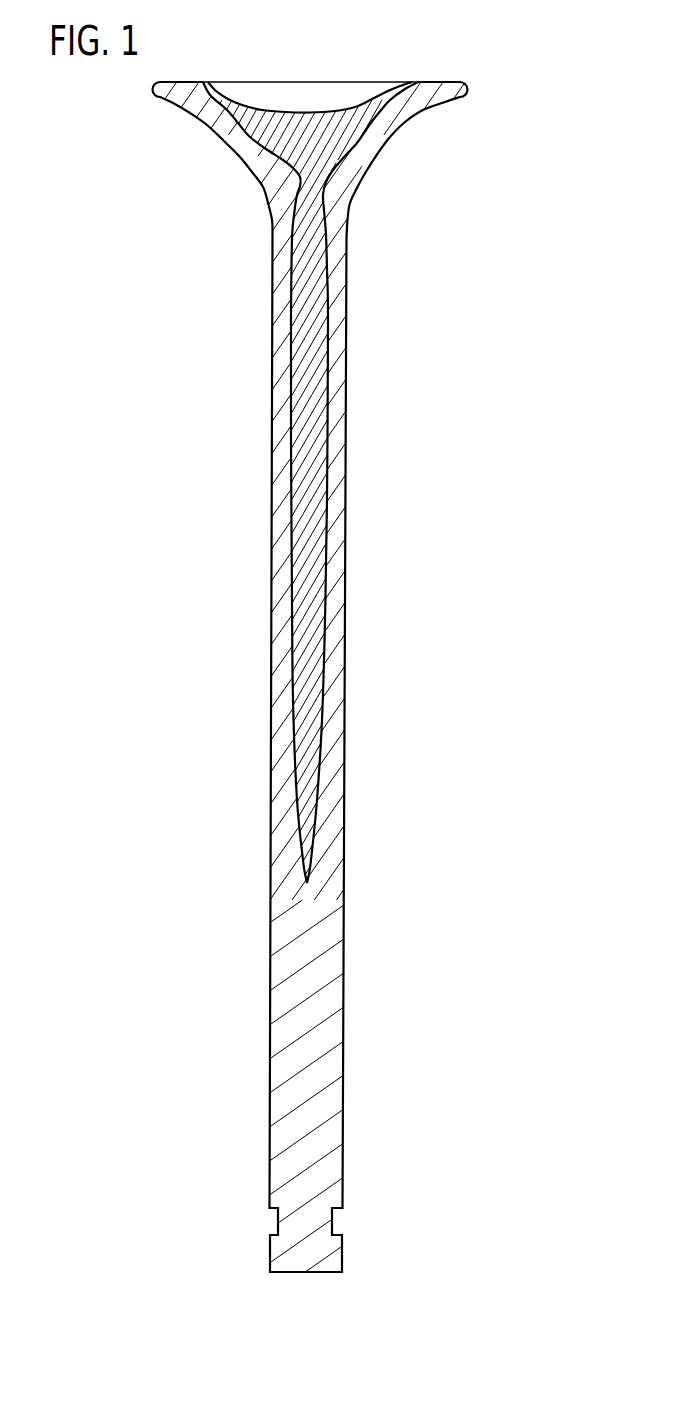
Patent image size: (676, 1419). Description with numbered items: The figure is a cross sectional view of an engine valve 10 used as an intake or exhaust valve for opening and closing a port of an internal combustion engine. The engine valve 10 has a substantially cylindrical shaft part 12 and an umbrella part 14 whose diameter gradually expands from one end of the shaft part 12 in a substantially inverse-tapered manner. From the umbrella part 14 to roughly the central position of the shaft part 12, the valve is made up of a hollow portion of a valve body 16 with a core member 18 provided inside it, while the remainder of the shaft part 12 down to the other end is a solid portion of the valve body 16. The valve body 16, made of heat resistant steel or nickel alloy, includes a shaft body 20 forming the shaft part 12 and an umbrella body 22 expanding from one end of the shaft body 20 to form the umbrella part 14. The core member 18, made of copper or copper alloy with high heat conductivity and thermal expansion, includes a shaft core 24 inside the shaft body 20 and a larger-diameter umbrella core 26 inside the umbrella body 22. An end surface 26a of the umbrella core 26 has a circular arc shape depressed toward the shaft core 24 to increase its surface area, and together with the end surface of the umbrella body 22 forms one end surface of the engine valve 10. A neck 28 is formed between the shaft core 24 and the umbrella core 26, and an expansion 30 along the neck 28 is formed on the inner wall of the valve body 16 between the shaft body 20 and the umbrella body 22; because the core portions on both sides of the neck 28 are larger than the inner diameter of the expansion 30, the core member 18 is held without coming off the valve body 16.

The engine valve 10 is at (525, 48).
The shaft part 12 is at (381, 818).
The umbrella part 14 is at (442, 65).
The valve body 16 is at (528, 83).
The core member 18 is at (141, 175).
The shaft body 20 is at (340, 272).
The umbrella body 22 is at (464, 93).
The shaft core 24 is at (307, 297).
The umbrella core 26 is at (237, 118).
The end surface 26a is at (303, 92).
The neck 28 is at (312, 203).
The expansion 30 is at (327, 178).